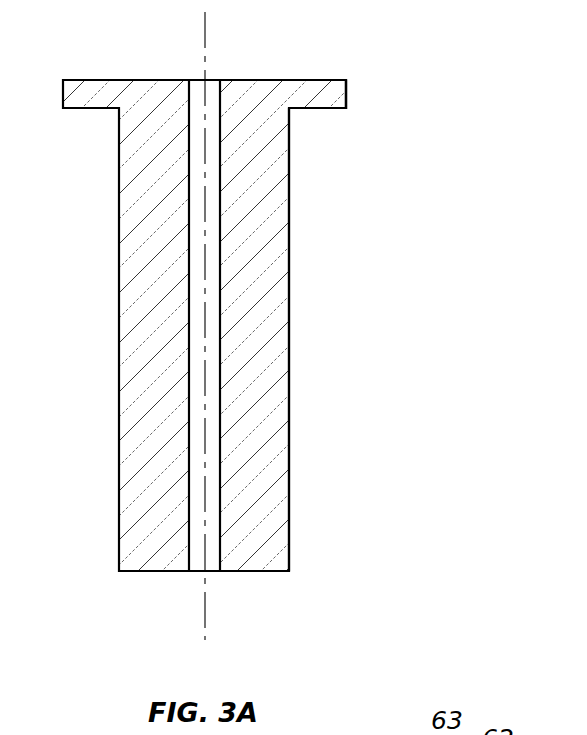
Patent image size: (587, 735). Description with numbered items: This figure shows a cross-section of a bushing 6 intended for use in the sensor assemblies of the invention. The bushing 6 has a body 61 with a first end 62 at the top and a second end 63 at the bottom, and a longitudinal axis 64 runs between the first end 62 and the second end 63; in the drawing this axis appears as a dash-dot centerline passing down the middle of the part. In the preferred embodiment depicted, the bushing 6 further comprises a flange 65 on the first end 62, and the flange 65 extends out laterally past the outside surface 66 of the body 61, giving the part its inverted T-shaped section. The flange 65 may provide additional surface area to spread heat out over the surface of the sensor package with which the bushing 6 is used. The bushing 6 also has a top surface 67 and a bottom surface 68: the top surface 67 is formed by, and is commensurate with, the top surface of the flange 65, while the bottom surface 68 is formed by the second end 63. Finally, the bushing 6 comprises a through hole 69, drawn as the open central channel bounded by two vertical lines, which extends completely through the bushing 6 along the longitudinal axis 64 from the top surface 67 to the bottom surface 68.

The bushing 6 is at (458, 168).
The body 61 is at (145, 233).
The first end 62 is at (105, 78).
The second end 63 is at (265, 572).
The longitudinal axis 64 is at (205, 30).
The flange 65 is at (346, 97).
The outside surface 66 is at (289, 332).
The top surface 67 is at (300, 79).
The bottom surface 68 is at (145, 572).
The through hole 69 is at (198, 92).